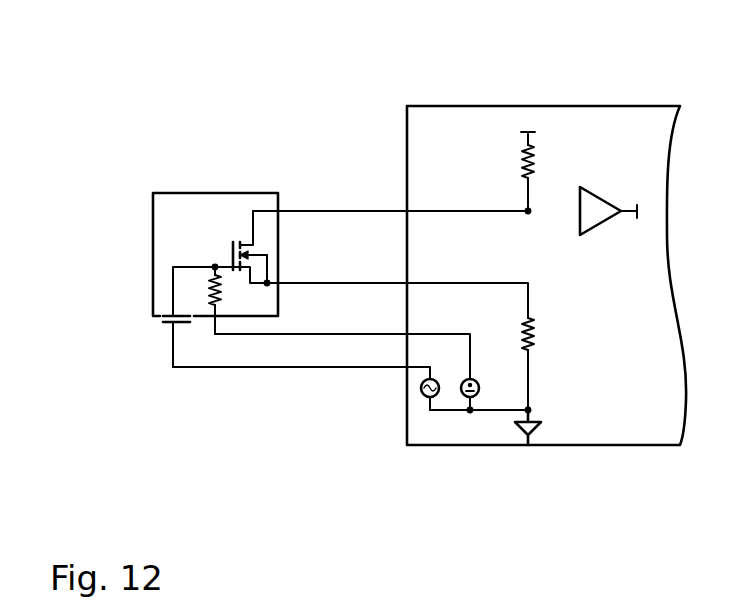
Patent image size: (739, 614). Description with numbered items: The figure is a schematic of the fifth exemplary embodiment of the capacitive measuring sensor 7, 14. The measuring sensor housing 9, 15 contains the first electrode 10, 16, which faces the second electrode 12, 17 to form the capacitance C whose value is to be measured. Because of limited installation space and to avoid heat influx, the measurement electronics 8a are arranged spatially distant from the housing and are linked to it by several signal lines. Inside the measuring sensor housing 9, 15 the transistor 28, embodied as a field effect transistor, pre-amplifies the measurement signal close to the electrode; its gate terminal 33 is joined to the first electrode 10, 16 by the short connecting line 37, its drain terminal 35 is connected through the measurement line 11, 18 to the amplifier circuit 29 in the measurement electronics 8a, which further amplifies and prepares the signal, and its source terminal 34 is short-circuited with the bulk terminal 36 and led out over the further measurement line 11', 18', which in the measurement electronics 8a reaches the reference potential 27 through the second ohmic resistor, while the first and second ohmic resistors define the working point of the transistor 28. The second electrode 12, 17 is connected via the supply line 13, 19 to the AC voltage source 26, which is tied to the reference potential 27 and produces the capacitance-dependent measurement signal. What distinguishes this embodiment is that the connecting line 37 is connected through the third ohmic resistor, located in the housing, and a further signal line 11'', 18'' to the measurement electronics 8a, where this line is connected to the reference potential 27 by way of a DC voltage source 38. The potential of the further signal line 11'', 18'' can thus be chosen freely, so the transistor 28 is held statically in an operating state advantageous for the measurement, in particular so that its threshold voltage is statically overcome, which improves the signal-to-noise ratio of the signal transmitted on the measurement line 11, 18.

The capacitive measuring sensor 7 is at (137, 127).
The capacitive measuring sensor 14 is at (192, 178).
The measuring sensor housing 9 is at (232, 193).
The measuring sensor housing 15 is at (215, 207).
The transistor 28 is at (212, 265).
The drain terminal 35 is at (252, 208).
The measurement line 11 is at (390, 145).
The measurement line 18 is at (390, 158).
The measurement electronics 8a is at (543, 112).
The amplifier circuit 29 is at (594, 198).
The gate terminal 33 is at (226, 242).
The connecting line 37 is at (233, 265).
The first electrode 10 is at (170, 314).
The first electrode 16 is at (122, 330).
The second electrode 12 is at (168, 326).
The second electrode 17 is at (121, 367).
The supply line 13 is at (182, 367).
The supply line 19 is at (260, 428).
The further signal line 11'' is at (312, 411).
The further signal line 18'' is at (312, 411).
The source terminal 34 is at (250, 268).
The bulk terminal 36 is at (268, 270).
The further measurement line 11' is at (397, 386).
The further measurement line 18' is at (397, 386).
The AC voltage source 26 is at (424, 397).
The DC voltage source 38 is at (476, 397).
The reference potential 27 is at (529, 437).